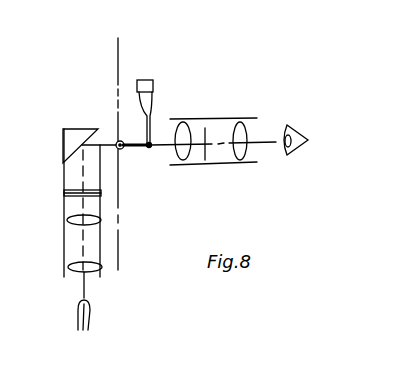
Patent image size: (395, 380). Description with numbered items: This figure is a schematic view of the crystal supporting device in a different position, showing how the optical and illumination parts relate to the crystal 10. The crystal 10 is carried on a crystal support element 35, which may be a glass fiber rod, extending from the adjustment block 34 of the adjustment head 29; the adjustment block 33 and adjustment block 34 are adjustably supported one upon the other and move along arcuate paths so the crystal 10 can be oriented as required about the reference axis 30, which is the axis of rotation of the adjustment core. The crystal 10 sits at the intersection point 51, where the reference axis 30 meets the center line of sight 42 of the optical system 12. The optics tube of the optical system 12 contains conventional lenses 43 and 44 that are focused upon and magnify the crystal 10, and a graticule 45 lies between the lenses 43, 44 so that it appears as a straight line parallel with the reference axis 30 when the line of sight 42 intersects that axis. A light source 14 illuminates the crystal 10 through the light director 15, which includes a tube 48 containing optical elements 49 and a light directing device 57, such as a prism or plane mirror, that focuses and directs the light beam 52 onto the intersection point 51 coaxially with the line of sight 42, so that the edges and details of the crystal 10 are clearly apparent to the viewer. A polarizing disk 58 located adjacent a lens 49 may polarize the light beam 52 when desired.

The crystal 10 is at (117, 140).
The optical system 12 is at (213, 133).
The light source 14 is at (92, 308).
The light director 15 is at (84, 210).
The adjustment head 29 is at (171, 92).
The reference axis 30 is at (121, 51).
The adjustment block 33 is at (146, 80).
The adjustment block 34 is at (154, 104).
The crystal support element 35 is at (148, 151).
The line of sight 42 is at (265, 146).
The lens 43 is at (240, 121).
The lens 44 is at (180, 163).
The graticule 45 is at (208, 127).
The tube 48 is at (102, 240).
The optical elements 49 is at (70, 266).
The intersection point 51 is at (123, 155).
The light beam 52 is at (79, 285).
The light directing device 57 is at (72, 143).
The polarizing disk 58 is at (63, 193).